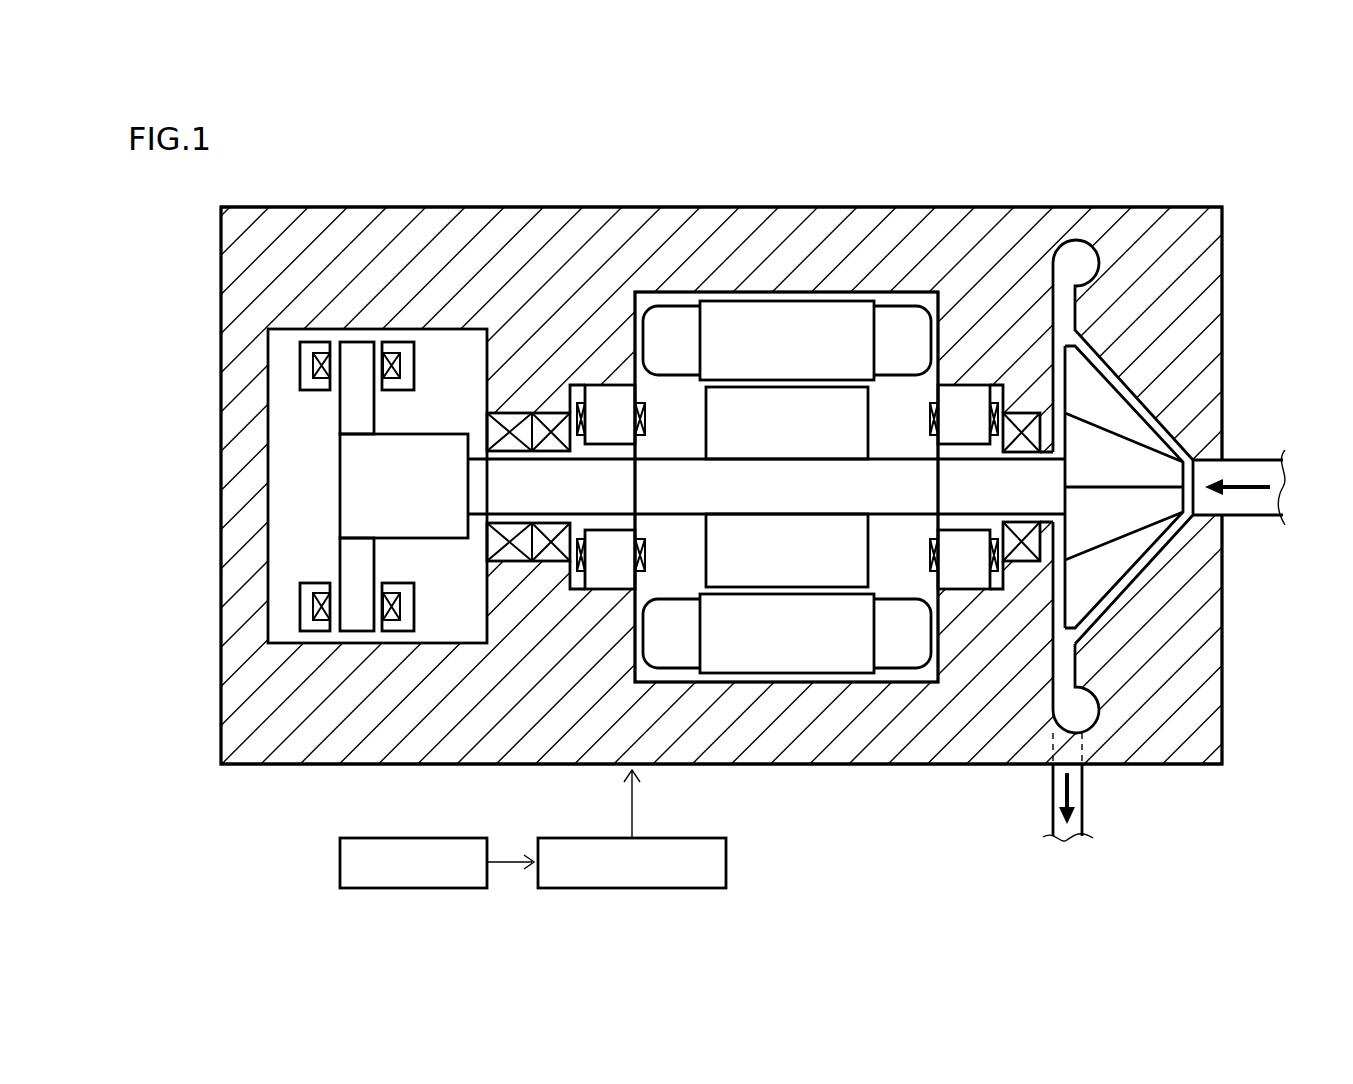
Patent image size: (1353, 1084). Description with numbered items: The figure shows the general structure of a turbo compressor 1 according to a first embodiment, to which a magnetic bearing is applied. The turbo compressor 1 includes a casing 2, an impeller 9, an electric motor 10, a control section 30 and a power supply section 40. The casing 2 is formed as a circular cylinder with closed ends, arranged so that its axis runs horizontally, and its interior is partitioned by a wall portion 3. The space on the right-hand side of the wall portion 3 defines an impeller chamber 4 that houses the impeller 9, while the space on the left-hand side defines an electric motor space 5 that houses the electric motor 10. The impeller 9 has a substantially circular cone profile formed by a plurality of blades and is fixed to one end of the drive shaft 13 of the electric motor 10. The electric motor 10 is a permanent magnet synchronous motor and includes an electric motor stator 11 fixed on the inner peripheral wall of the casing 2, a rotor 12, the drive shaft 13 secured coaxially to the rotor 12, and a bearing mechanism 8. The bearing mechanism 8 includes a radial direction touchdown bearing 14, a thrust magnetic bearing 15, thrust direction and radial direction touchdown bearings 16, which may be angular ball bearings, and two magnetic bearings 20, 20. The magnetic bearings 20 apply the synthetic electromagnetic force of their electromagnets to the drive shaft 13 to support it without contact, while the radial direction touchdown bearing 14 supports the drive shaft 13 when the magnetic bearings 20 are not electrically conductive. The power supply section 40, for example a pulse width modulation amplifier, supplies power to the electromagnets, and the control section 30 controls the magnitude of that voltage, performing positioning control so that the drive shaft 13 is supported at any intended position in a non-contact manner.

The turbo compressor 1 is at (1223, 177).
The casing 2 is at (807, 193).
The wall portion 3 is at (1045, 646).
The impeller chamber 4 is at (1135, 397).
The electric motor space 5 is at (673, 585).
The bearing mechanism 8 is at (662, 417).
The impeller 9 is at (1113, 559).
The electric motor 10 is at (786, 689).
The electric motor stator 11 is at (823, 663).
The rotor 12 is at (868, 578).
The drive shaft 13 is at (678, 503).
The radial direction touchdown bearing 14 is at (1022, 418).
The thrust magnetic bearing 15 is at (310, 623).
The thrust direction and radial direction touchdown bearings 16 is at (508, 553).
The magnetic bearing 20 is at (607, 390).
The control section 30 is at (340, 860).
The power supply section 40 is at (726, 858).